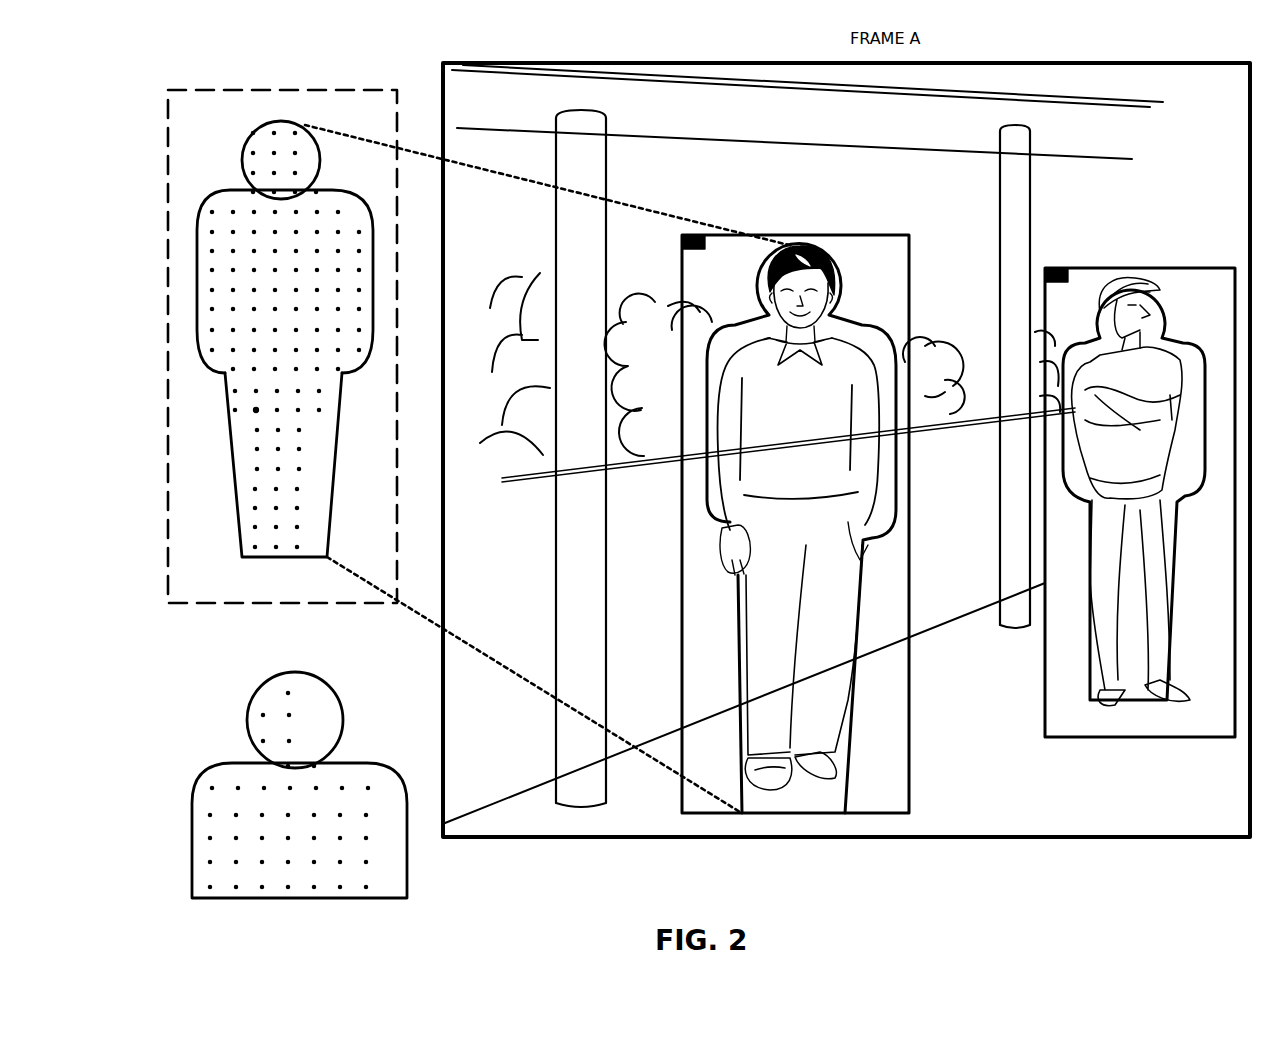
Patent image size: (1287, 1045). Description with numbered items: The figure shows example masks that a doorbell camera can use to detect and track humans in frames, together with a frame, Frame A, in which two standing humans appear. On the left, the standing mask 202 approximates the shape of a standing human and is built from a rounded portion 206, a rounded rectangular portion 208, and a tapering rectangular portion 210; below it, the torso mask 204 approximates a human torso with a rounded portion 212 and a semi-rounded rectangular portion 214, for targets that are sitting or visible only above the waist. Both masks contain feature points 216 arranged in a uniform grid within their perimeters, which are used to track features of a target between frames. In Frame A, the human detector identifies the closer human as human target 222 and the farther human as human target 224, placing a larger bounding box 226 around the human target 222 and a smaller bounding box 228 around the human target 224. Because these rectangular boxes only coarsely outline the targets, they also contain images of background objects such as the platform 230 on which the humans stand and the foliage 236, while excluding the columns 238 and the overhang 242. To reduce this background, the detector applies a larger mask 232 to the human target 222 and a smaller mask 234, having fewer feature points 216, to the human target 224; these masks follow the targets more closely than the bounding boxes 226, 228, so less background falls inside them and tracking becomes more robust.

The standing mask 202 is at (165, 66).
The torso mask 204 is at (165, 680).
The rounded portion 206 is at (248, 138).
The rounded rectangular portion 208 is at (230, 188).
The tapering rectangular portion 210 is at (235, 510).
The rounded portion 212 is at (254, 704).
The semi-rounded rectangular portion 214 is at (220, 764).
The feature points 216 is at (256, 410).
The human target 222 is at (852, 323).
The human target 224 is at (1180, 345).
The bounding box 226 is at (884, 233).
The bounding box 228 is at (1185, 267).
The platform 230 is at (540, 782).
The larger mask 232 is at (756, 280).
The smaller mask 234 is at (1180, 545).
The foliage 236 is at (500, 278).
The columns 238 is at (556, 552).
The overhang 242 is at (717, 137).